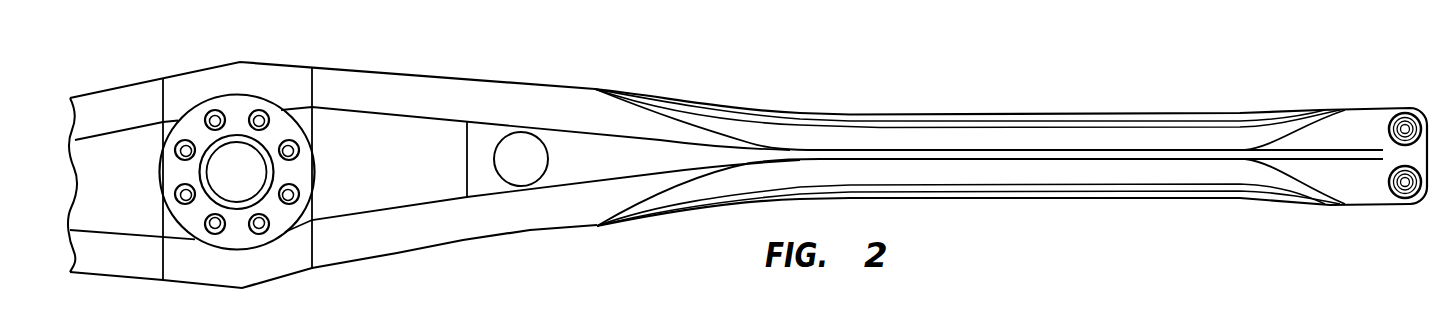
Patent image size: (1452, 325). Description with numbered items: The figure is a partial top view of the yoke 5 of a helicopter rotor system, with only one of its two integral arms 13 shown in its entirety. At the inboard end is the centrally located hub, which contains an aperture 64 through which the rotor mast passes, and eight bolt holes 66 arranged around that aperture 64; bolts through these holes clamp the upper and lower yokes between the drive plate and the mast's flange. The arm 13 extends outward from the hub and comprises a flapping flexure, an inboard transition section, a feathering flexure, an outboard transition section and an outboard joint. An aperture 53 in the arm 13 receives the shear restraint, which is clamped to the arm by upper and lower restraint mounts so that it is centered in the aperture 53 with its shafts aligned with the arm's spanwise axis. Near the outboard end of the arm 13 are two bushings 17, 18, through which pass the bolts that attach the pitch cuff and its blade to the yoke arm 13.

The upper yoke 5 is at (225, 58).
The yoke arm 13 is at (1018, 85).
The bushing 17 is at (1419, 112).
The bushing 18 is at (1405, 190).
The aperture 53 is at (508, 173).
The aperture 64 is at (244, 153).
The bolt holes 66 is at (218, 117).